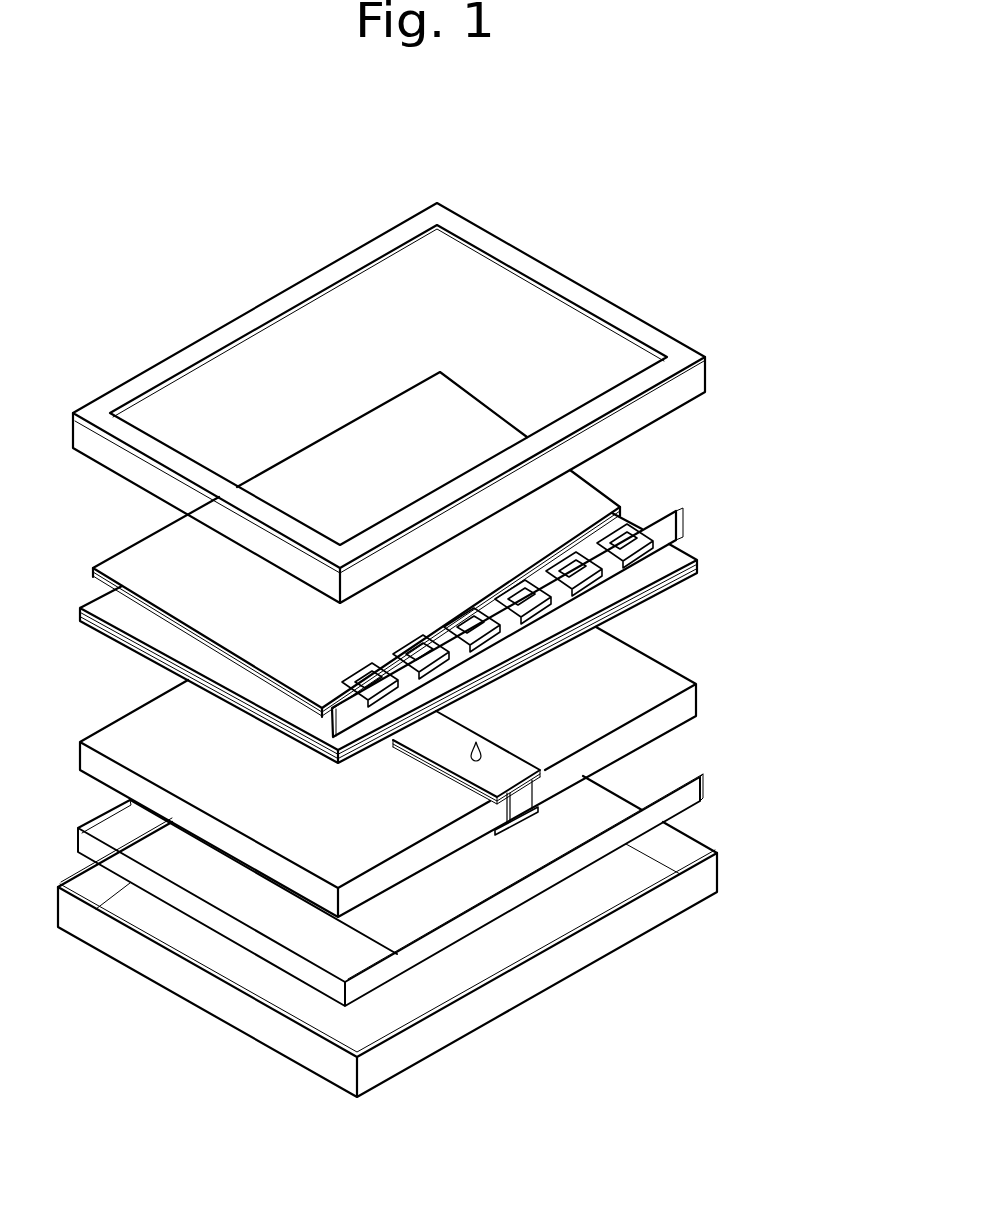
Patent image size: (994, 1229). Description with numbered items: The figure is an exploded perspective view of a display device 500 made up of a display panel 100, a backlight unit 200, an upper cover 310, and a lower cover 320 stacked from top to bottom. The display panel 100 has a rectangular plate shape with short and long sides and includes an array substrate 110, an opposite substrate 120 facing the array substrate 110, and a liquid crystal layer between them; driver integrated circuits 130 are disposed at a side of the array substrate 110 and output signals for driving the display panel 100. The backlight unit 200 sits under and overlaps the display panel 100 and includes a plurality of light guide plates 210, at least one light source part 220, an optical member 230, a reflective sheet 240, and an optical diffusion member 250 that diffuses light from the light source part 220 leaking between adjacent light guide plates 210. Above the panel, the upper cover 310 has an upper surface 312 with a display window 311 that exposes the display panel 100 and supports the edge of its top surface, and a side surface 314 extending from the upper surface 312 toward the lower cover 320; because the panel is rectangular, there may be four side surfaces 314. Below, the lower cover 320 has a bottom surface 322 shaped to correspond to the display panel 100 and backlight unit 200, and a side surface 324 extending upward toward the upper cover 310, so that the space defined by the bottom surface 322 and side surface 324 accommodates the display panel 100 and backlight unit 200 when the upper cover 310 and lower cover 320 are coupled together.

The display device 500 is at (670, 200).
The upper cover 310 is at (668, 336).
The display window 311 is at (343, 328).
The upper surface 312 is at (508, 256).
The side surface 314 is at (685, 383).
The display panel 100 is at (764, 430).
The array substrate 110 is at (633, 494).
The opposite substrate 120 is at (593, 500).
The driver integrated circuits 130 is at (628, 525).
The backlight unit 200 is at (784, 633).
The light guide plates 210 is at (688, 702).
The light source part 220 is at (520, 822).
The optical member 230 is at (637, 598).
The reflective sheet 240 is at (692, 792).
The optical diffusion member 250 is at (503, 766).
The lower cover 320 is at (677, 929).
The bottom surface 322 is at (330, 1023).
The side surface 324 is at (547, 978).